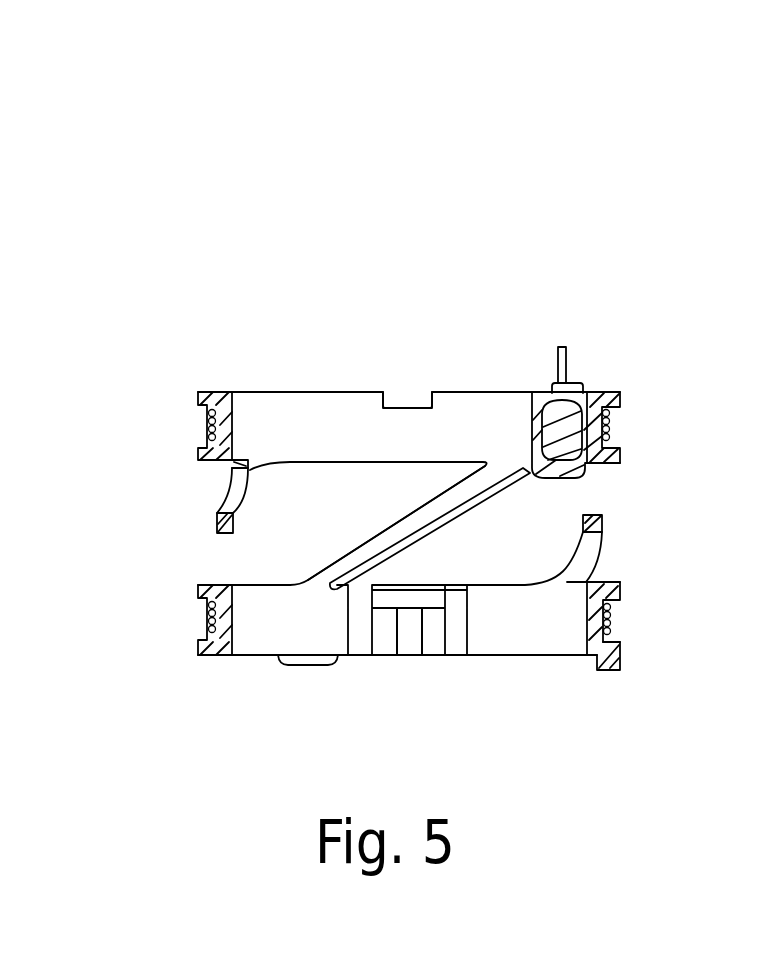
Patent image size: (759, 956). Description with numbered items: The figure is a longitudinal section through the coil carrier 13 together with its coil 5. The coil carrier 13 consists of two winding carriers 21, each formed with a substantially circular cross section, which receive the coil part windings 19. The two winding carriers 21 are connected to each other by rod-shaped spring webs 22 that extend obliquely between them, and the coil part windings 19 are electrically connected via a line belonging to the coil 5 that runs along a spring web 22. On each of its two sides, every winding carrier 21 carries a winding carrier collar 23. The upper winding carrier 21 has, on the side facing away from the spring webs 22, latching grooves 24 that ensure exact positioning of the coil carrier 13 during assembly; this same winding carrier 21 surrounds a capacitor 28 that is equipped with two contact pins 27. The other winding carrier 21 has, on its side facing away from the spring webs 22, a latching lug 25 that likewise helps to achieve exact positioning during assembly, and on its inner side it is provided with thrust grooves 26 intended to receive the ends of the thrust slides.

The coil carrier 13 is at (312, 255).
The winding carrier 21 is at (315, 420).
The spring web 22 is at (360, 552).
The winding carrier collar 23 is at (202, 453).
The coil part winding 19 is at (210, 432).
The latching groove 24 is at (410, 402).
The contact pin 27 is at (560, 365).
The capacitor 28 is at (558, 427).
The coil 5 is at (453, 533).
The latching lug 25 is at (610, 667).
The thrust groove 26 is at (405, 635).